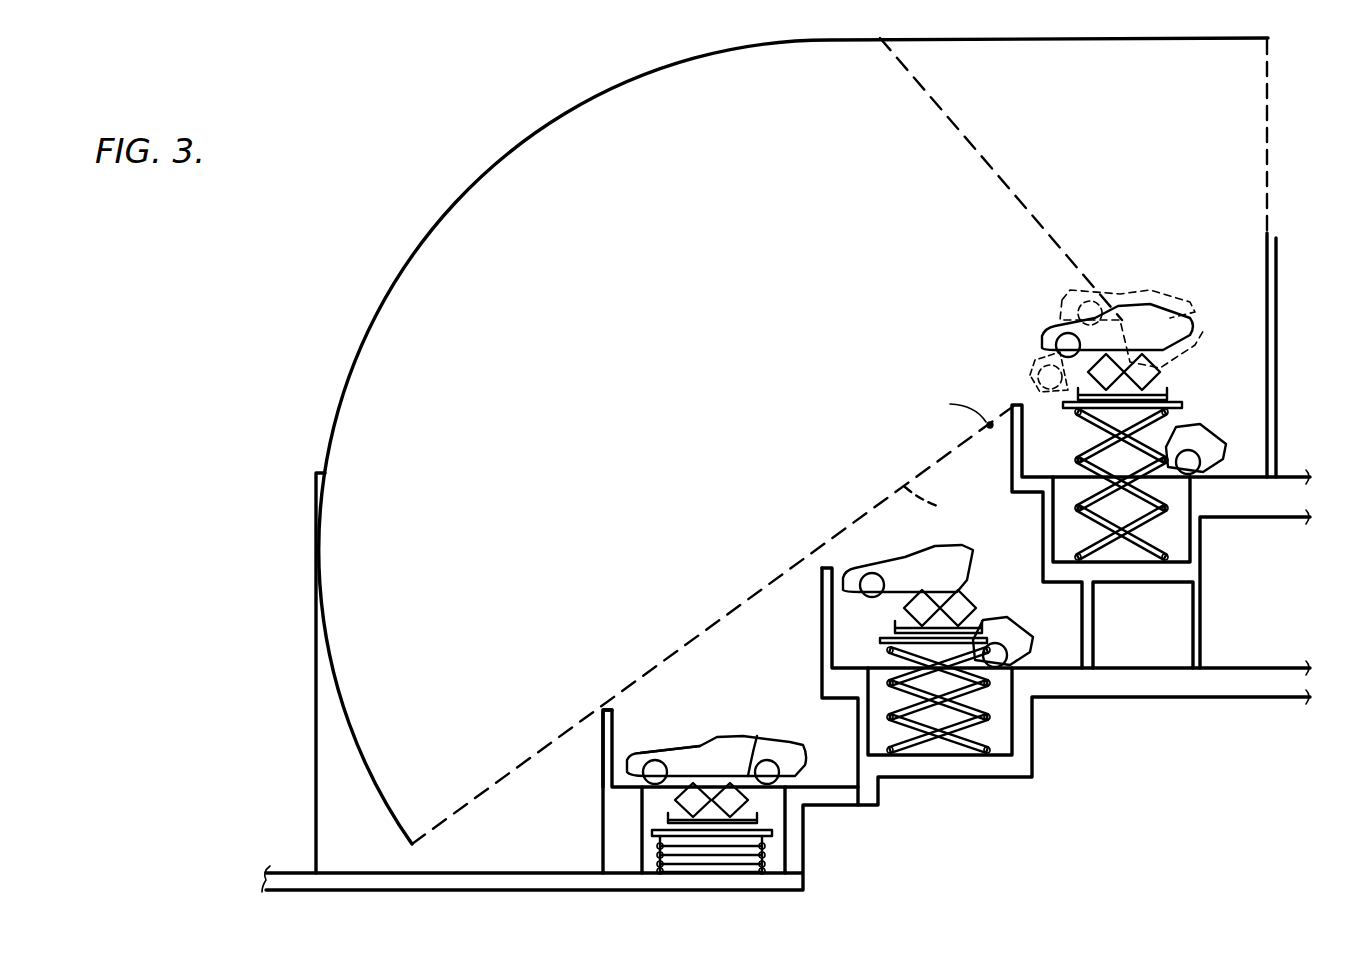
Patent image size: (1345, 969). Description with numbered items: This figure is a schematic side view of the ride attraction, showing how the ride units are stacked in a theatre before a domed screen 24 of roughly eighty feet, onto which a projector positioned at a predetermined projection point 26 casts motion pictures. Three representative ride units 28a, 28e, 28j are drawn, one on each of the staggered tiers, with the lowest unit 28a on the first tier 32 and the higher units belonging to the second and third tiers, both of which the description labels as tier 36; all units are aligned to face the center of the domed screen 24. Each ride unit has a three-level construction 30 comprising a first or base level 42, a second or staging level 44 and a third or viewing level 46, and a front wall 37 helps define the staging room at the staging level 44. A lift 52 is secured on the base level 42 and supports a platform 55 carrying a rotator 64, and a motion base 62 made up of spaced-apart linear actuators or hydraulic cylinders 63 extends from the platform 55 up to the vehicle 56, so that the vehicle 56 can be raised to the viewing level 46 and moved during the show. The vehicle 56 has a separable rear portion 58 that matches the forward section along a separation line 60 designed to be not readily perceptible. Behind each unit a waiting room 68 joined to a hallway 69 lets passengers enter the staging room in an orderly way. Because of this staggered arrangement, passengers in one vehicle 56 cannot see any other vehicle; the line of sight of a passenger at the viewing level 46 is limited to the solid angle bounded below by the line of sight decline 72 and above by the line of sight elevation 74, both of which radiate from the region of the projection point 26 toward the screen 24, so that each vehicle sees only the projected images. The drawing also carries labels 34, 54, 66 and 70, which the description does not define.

The domed screen 24 is at (344, 405).
The projection point 26 is at (989, 420).
The ride unit 28a is at (765, 774).
The ride unit 28e is at (860, 550).
The ride unit 28j is at (1024, 328).
The 3-level construction 30 is at (693, 692).
The first tier 32 is at (596, 781).
The middle tier platform 34 is at (805, 596).
The second tier 36 is at (1004, 450).
The front wall 37 is at (602, 733).
The first or base level 42 is at (808, 882).
The second or staging level 44 is at (850, 776).
The third or viewing level 46 is at (605, 712).
The lift 52 is at (742, 845).
The vehicle support linkage 54 is at (700, 797).
The platform 55 is at (1183, 403).
The vehicle 56 is at (663, 757).
The separable back or rear portion 58 is at (778, 752).
The separation line 60 is at (757, 736).
The motion base 62 is at (1163, 380).
The linear actuators or hydraulic cylinders 63 is at (968, 600).
The rotator 64 is at (1175, 394).
The scissor lift (middle tier) 66 is at (894, 606).
The waiting room 68 is at (1143, 653).
The hallway 69 is at (1250, 653).
The scissor lift (upper tier) 70 is at (1078, 368).
The line of sight decline 72 is at (939, 510).
The line of sight elevation 74 is at (1028, 205).